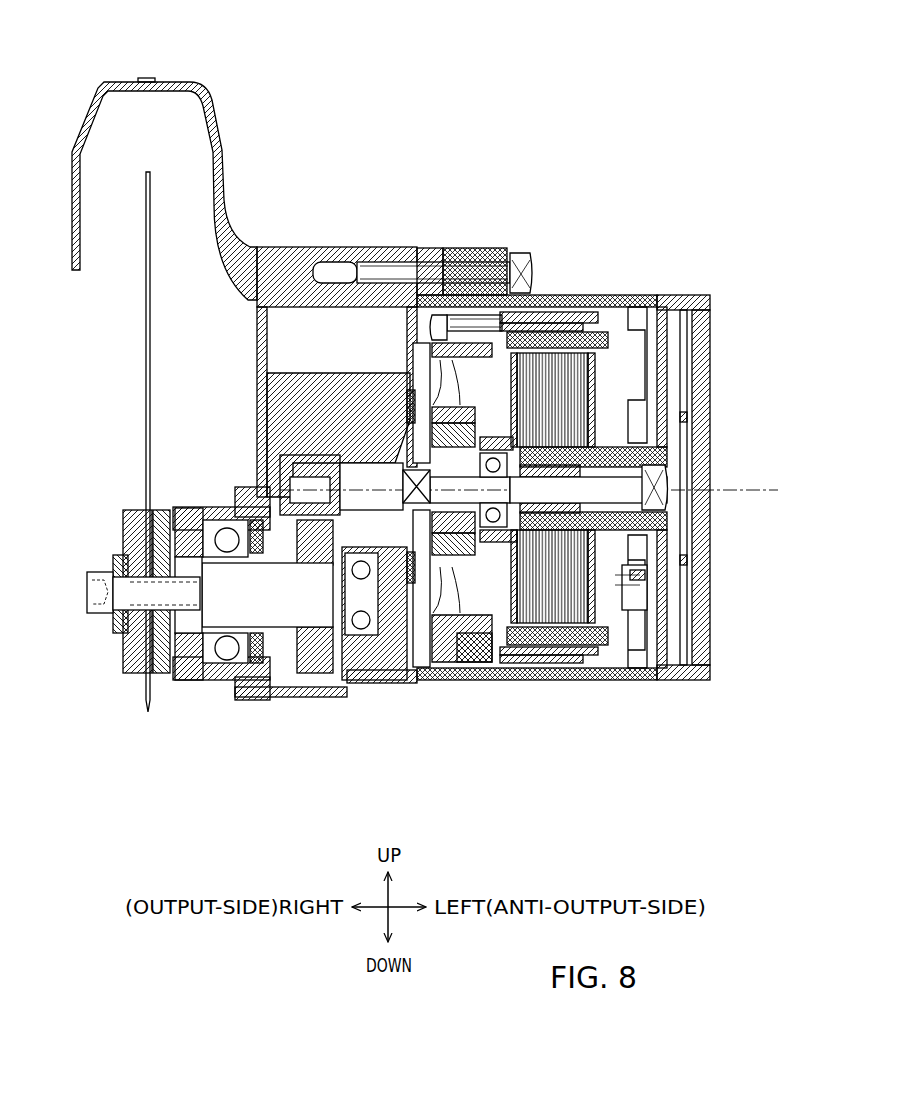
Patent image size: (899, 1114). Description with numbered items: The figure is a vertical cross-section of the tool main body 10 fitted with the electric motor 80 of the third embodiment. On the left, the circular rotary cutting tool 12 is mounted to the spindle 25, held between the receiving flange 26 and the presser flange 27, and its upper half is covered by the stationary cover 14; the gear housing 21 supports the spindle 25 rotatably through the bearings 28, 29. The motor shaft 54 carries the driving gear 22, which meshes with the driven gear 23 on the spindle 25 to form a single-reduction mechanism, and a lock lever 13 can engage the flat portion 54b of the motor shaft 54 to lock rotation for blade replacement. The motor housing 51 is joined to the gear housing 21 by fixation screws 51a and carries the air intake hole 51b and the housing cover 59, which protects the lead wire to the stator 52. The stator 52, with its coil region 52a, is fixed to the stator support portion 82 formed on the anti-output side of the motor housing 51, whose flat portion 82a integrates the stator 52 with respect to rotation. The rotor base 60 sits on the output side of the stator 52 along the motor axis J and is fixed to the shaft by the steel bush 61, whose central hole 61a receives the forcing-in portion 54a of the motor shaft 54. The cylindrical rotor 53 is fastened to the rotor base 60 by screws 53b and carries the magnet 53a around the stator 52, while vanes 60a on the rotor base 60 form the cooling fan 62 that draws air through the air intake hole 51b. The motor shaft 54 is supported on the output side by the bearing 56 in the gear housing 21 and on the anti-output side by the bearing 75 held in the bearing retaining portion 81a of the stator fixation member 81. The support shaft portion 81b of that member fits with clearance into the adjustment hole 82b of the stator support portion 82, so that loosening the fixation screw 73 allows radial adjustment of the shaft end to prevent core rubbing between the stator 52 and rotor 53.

The tool main body 10 is at (233, 110).
The rotary cutting tool 12 is at (145, 309).
The lock lever 13 is at (417, 520).
The stationary cover 14 is at (78, 125).
The gear housing 21 is at (283, 247).
The driving gear 22 is at (367, 477).
The driven gear 23 is at (300, 620).
The spindle 25 is at (148, 660).
The receiving flange 26 is at (148, 521).
The presser flange 27 is at (130, 543).
The bearing 28 is at (228, 605).
The bearing 29 is at (358, 632).
The motor housing 51 is at (605, 296).
The fixation screw 51a is at (500, 293).
The air intake hole 51b is at (655, 627).
The stator 52 is at (558, 378).
The stator coil lower 52a is at (565, 640).
The rotor 53 is at (590, 340).
The magnet 53a is at (530, 645).
The screw 53b is at (418, 305).
The motor shaft 54 is at (333, 463).
The forcing-in portion 54a is at (418, 560).
The flat portion 54b is at (410, 465).
The bearing 56 is at (365, 475).
The housing cover 59 is at (710, 620).
The rotor base 60 is at (328, 545).
The vane 60a is at (465, 600).
The steel bush 61 is at (484, 330).
The central hole 61a is at (432, 320).
The cooling fan 62 is at (463, 590).
The fixation screw 73 is at (660, 477).
The bearing 75 is at (500, 610).
The electric motor 80 is at (640, 292).
The stator fixation member 81 is at (540, 350).
The bearing retaining portion 81a is at (528, 330).
The support shaft portion 81b is at (682, 418).
The stator support portion 82 is at (620, 455).
The flat portion 82a is at (580, 425).
The adjustment hole 82b is at (585, 630).
The motor axis J is at (743, 490).